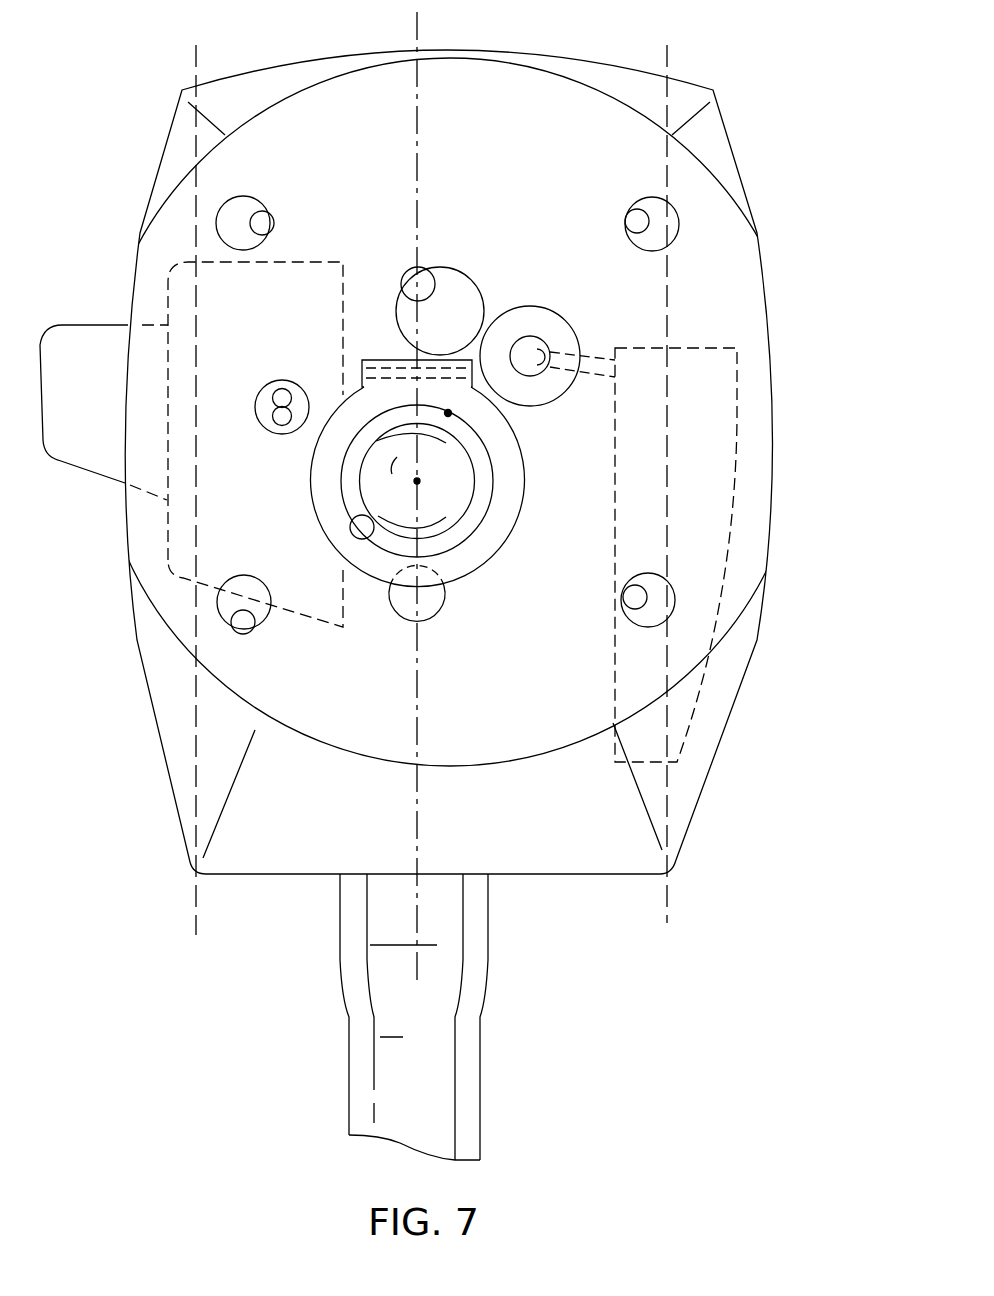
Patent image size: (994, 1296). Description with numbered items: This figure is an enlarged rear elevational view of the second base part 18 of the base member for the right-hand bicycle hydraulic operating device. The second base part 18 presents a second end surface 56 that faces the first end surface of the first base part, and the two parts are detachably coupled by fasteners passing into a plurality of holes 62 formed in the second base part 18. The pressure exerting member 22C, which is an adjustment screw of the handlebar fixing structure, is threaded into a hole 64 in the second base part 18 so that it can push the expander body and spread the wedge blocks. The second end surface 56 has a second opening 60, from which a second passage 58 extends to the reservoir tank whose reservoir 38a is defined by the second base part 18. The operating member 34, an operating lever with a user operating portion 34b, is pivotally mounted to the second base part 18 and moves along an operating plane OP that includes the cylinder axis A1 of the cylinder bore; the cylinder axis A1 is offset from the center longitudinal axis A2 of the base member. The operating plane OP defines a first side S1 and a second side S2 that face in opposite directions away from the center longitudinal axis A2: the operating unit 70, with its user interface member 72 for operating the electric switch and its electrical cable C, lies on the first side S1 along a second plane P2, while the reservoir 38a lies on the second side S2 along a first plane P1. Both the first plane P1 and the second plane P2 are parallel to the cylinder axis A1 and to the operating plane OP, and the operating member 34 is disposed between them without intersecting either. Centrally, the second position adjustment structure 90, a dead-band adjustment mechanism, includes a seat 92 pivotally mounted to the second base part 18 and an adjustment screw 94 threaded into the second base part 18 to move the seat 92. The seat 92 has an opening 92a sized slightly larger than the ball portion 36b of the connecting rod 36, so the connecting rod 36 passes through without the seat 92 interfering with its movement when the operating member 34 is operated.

The second base part 18 is at (622, 64).
The pressure exerting member 22C is at (472, 272).
The operating member 34 is at (486, 1057).
The user operating portion 34b is at (349, 1086).
The connecting rod 36 is at (456, 531).
The ball portion 36b is at (447, 490).
The reservoir 38a is at (738, 402).
The second end surface 56 is at (462, 705).
The second passage 58 is at (598, 357).
The second opening 60 is at (522, 336).
The holes 62 is at (264, 208).
The hole 64 is at (402, 294).
The operating unit 70 is at (166, 283).
The user interface member 72 is at (74, 468).
The second position adjustment structure 90 is at (366, 604).
The seat 92 is at (525, 512).
The opening 92a is at (372, 538).
The adjustment screw 94 is at (440, 613).
The cylinder axis A1 is at (417, 481).
The center longitudinal axis A2 is at (448, 413).
The electrical cable C is at (259, 382).
The operating plane OP is at (417, 25).
The first plane P1 is at (667, 903).
The second plane P2 is at (196, 915).
The first side S1 is at (368, 163).
The second side S2 is at (495, 163).